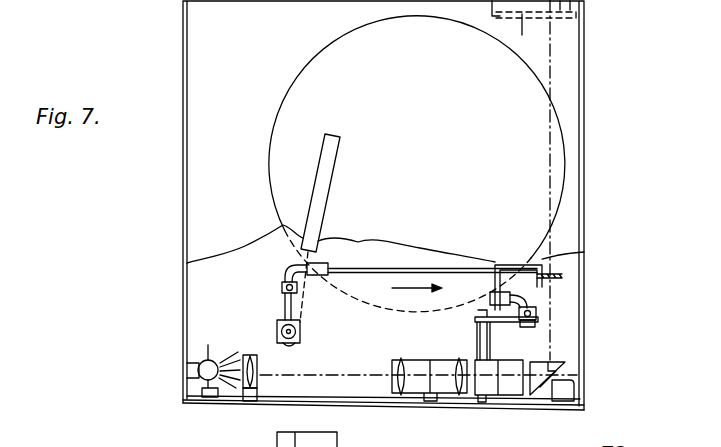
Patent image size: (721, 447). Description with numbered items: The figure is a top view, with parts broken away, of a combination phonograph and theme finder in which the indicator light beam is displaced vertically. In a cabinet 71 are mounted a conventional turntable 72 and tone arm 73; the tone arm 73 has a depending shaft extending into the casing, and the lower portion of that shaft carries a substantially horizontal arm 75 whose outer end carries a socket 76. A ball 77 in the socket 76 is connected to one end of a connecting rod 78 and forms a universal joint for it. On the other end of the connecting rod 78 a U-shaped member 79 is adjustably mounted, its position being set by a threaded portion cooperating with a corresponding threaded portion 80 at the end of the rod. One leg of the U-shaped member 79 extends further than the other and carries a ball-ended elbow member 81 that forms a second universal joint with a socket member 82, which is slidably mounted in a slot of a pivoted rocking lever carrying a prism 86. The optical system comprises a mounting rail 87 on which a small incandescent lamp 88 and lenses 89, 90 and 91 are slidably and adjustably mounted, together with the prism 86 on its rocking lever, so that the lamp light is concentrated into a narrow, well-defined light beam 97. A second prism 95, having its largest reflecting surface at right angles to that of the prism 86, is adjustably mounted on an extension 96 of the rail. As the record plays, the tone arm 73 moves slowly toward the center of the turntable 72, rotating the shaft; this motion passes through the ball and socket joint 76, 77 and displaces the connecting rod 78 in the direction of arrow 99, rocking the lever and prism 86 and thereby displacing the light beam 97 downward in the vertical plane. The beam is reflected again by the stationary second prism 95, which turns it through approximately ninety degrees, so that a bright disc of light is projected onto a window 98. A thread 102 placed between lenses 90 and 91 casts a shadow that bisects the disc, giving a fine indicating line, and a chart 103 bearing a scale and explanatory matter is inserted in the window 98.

The cabinet 71 is at (583, 214).
The turntable 72 is at (517, 118).
The tone arm 73 is at (324, 178).
The horizontal arm 75 is at (283, 305).
The socket 76 is at (282, 284).
The ball 77 is at (315, 280).
The connecting rod 78 is at (396, 271).
The U-shaped member 79 is at (558, 259).
The threaded portion 80 is at (555, 278).
The ball-ended elbow member 81 is at (535, 300).
The socket member 82 is at (540, 318).
The prism 86 is at (507, 390).
The mounting rail 87 is at (270, 401).
The incandescent lamp 88 is at (213, 359).
The lens 89 is at (258, 360).
The lens 90 is at (400, 394).
The lens 91 is at (458, 394).
The second prism 95 is at (574, 372).
The rail extension 96 is at (578, 392).
The light beam 97 is at (552, 153).
The window 98 is at (586, 9).
The arrow 99 is at (417, 300).
The thread 102 is at (432, 365).
The chart 103 is at (540, 35).